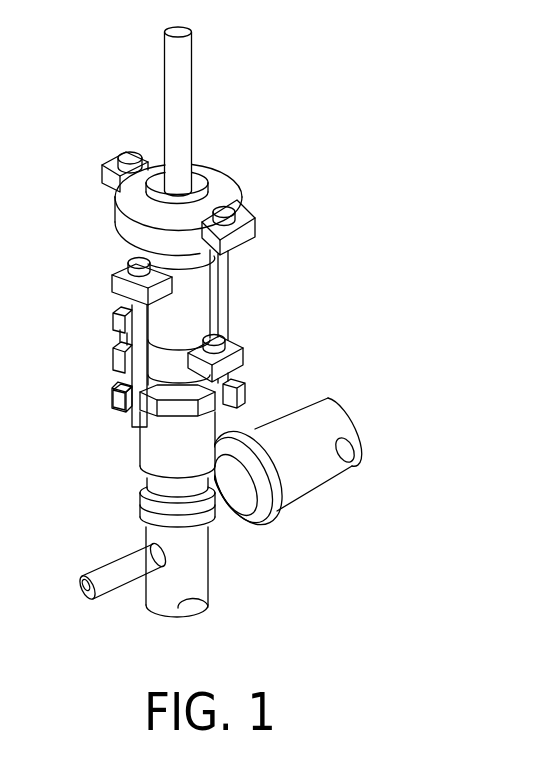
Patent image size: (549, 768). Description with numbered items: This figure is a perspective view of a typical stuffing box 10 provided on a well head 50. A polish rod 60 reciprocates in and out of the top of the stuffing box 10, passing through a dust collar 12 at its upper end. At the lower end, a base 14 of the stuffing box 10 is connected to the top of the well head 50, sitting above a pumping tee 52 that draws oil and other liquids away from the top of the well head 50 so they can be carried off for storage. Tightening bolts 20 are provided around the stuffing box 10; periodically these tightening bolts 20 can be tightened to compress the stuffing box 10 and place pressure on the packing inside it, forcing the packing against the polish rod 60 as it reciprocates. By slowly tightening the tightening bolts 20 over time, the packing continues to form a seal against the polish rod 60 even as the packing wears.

The stuffing box 10 is at (372, 224).
The dust collar 12 is at (223, 173).
The base 14 is at (141, 474).
The tightening bolts 20 is at (232, 295).
The well head 50 is at (208, 580).
The pumping tee 52 is at (193, 547).
The polish rod 60 is at (180, 88).